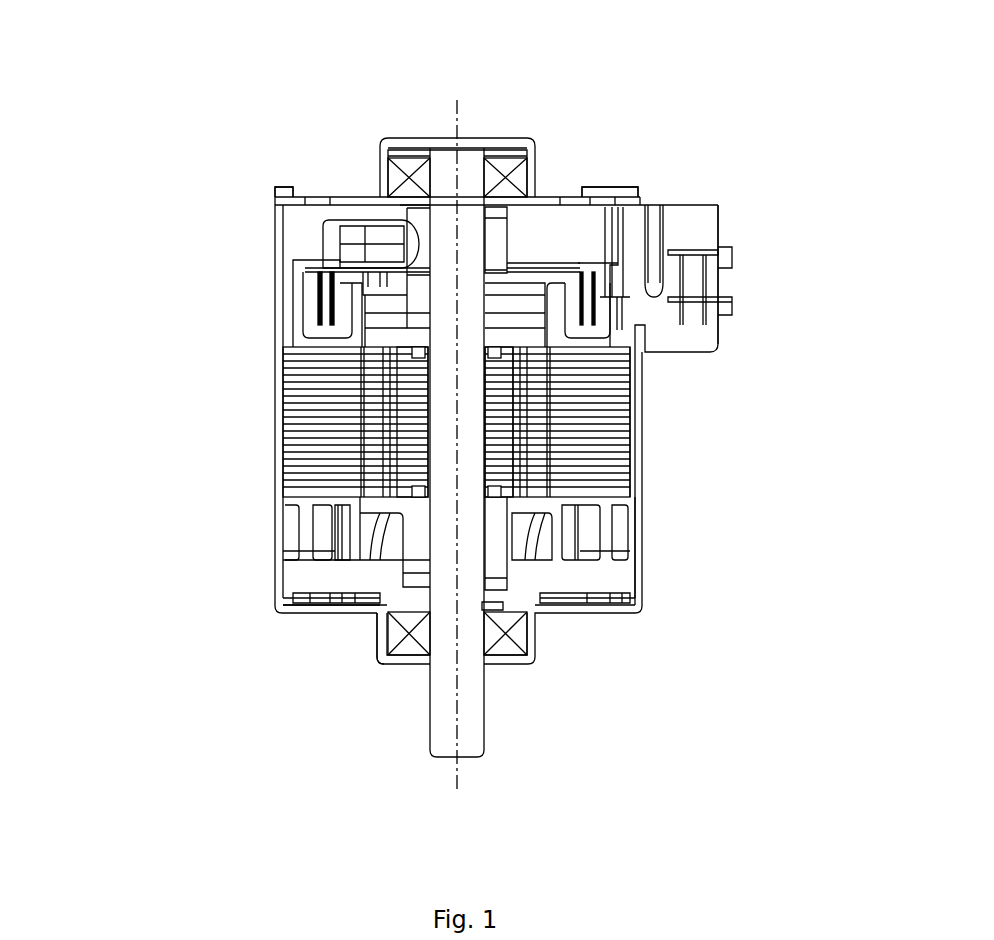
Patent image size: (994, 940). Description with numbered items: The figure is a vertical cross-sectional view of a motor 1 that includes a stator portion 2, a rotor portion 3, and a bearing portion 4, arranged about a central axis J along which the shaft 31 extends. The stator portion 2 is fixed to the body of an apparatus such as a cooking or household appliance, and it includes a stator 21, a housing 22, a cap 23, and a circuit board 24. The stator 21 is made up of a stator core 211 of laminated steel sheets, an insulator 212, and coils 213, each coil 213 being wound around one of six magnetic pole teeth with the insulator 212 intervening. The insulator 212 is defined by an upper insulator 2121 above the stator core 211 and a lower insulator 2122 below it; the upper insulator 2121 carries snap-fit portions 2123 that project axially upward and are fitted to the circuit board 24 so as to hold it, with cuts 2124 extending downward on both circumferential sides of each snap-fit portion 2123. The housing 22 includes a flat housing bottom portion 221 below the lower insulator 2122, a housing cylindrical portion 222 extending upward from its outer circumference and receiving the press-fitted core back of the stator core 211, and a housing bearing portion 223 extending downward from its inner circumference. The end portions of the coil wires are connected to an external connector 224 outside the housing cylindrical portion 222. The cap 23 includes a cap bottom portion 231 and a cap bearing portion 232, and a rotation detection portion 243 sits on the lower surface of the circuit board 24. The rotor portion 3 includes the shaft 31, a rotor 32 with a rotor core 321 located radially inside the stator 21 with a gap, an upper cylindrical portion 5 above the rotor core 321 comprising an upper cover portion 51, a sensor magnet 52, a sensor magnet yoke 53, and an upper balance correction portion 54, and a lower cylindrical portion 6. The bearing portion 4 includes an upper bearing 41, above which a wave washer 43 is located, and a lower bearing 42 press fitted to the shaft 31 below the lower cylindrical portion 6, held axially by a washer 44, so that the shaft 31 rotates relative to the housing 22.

The motor 1 is at (144, 101).
The stator portion 2 is at (653, 162).
The stator 21 is at (635, 438).
The stator core 211 is at (637, 455).
The insulator 212 is at (427, 308).
The upper insulator 2121 is at (300, 307).
The lower insulator 2122 is at (303, 513).
The snap-fit portions 2123 is at (598, 267).
The cuts 2124 is at (635, 370).
The coils 213 is at (327, 540).
The housing 22 is at (643, 557).
The housing bottom portion 221 is at (293, 614).
The housing cylindrical portion 222 is at (635, 512).
The housing bearing portion 223 is at (382, 633).
The external connector 224 is at (643, 270).
The cap 23 is at (270, 190).
The cap bottom portion 231 is at (548, 196).
The cap bearing portion 232 is at (405, 218).
The rotation detection portion 243 is at (378, 196).
The circuit board 24 is at (620, 297).
The rotor portion 3 is at (438, 475).
The shaft 31 is at (440, 693).
The rotor 32 is at (327, 423).
The rotor core 321 is at (370, 386).
The bearing portion 4 is at (403, 85).
The upper bearing 41 is at (400, 148).
The lower bearing 42 is at (510, 665).
The wave washer 43 is at (503, 157).
The washer 44 is at (530, 618).
The upper cylindrical portion 5 is at (456, 318).
The upper cover portion 51 is at (420, 296).
The sensor magnet 52 is at (522, 308).
The sensor magnet yoke 53 is at (512, 320).
The upper balance correction portion 54 is at (335, 242).
The lower cylindrical portion 6 is at (417, 568).
The central axis J is at (460, 100).